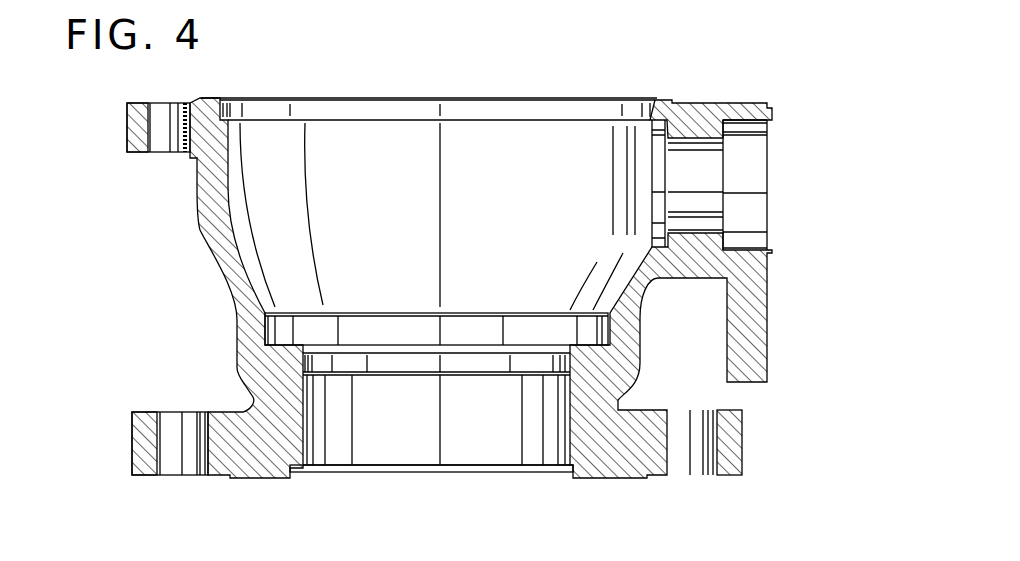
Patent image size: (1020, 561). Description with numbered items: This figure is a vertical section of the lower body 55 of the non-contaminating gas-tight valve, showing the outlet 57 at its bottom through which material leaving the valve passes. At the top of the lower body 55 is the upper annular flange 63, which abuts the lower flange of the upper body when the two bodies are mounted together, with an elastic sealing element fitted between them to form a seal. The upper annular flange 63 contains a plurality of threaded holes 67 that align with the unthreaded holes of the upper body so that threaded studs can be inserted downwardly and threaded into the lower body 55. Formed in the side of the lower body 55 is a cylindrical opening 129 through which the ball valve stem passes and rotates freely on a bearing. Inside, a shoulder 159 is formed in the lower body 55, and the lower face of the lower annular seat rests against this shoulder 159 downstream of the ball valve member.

The threaded holes 67 is at (147, 112).
The upper annular flange 63 is at (660, 98).
The cylindrical opening 129 is at (743, 252).
The shoulder 159 is at (585, 350).
The lower body 55 is at (140, 431).
The outlet 57 is at (567, 443).